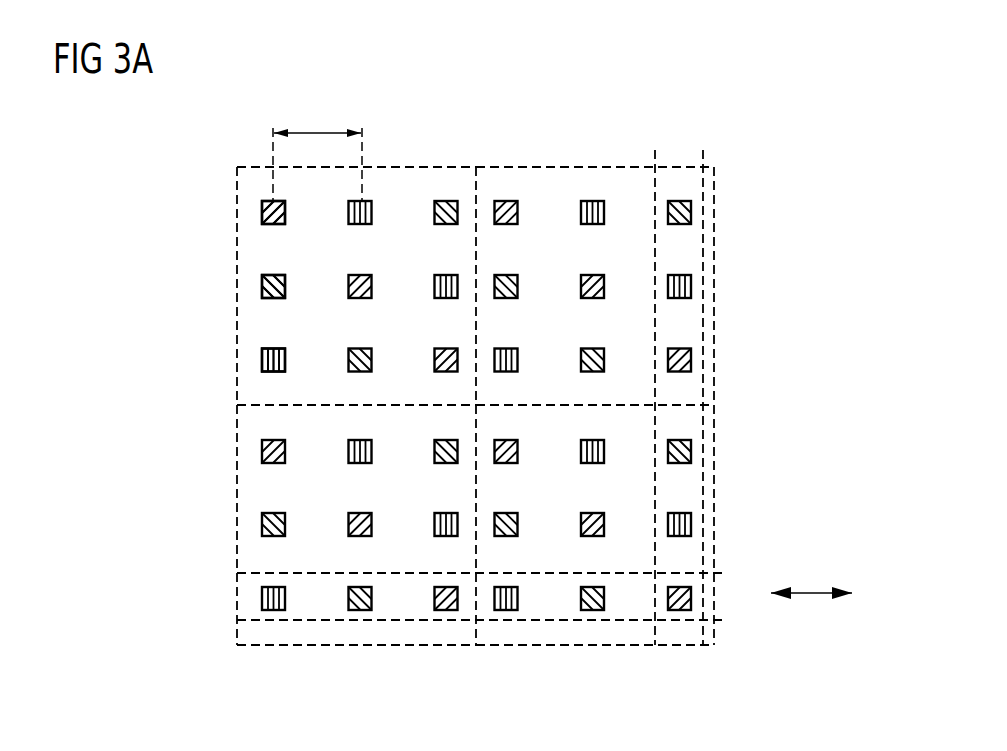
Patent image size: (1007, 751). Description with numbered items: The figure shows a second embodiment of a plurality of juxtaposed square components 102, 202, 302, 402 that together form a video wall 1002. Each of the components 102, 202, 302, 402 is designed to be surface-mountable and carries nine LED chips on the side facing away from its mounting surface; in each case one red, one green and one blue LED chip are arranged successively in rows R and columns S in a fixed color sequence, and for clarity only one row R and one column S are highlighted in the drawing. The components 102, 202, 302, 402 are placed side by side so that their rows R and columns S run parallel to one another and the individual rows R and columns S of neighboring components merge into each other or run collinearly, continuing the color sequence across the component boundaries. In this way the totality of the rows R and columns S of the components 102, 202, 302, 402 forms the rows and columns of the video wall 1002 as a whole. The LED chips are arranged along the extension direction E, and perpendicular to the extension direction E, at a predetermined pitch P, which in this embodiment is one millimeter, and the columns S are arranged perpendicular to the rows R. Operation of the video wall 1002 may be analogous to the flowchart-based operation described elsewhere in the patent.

The video wall 1002 is at (703, 90).
The square component 102 is at (408, 166).
The square component 202 is at (612, 166).
The square component 302 is at (364, 645).
The square component 402 is at (602, 645).
The column S is at (683, 168).
The row R is at (733, 599).
The extension direction E is at (813, 592).
The pitch P is at (316, 128).